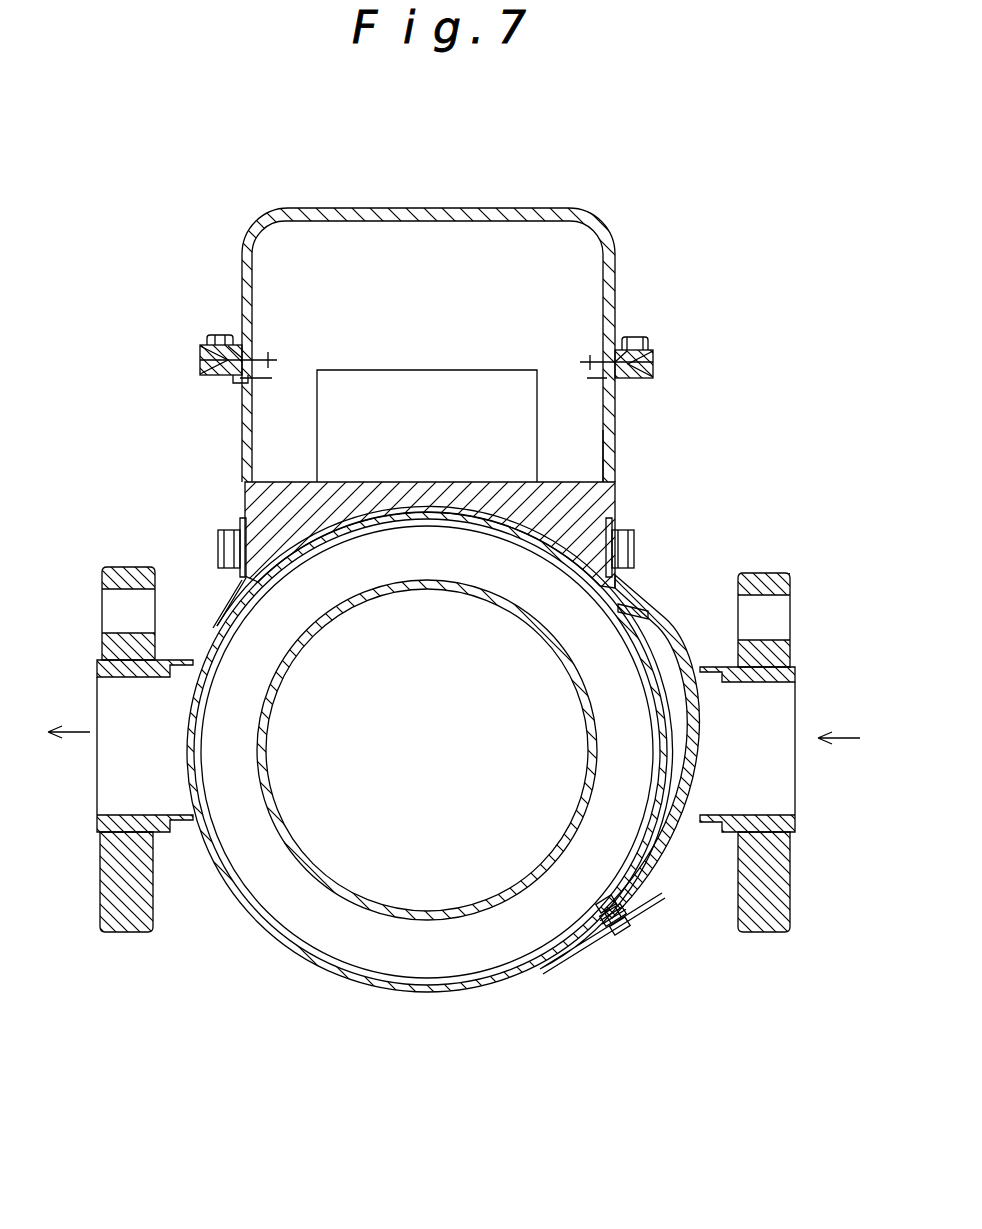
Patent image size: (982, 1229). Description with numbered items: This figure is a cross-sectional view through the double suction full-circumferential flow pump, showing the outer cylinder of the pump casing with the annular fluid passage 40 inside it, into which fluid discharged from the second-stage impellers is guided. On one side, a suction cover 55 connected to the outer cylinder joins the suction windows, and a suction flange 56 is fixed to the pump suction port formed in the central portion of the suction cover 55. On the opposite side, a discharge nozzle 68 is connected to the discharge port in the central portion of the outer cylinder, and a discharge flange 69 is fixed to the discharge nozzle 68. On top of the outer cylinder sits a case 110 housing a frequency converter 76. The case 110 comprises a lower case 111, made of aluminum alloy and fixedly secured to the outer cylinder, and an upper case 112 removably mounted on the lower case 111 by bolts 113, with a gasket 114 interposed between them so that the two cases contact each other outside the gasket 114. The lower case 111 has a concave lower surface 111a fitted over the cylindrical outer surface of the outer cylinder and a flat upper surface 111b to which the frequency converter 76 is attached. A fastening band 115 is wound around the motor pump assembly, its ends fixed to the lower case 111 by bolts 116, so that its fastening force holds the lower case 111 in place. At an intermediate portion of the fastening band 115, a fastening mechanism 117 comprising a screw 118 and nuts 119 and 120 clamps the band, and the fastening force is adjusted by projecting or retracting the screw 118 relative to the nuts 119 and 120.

The annular fluid passage 40 is at (497, 950).
The suction cover 55 is at (692, 652).
The suction flange 56 is at (778, 885).
The discharge nozzle 68 is at (179, 836).
The discharge flange 69 is at (125, 905).
The frequency converter 76 is at (483, 380).
The case 110 is at (105, 220).
The lower case 111 is at (407, 639).
The concave lower surface 111a is at (500, 546).
The flat upper surface 111b is at (605, 478).
The upper case 112 is at (240, 302).
The bolts 113 is at (632, 342).
The gasket 114 is at (262, 362).
The fastening band 115 is at (672, 622).
The bolts 116 is at (218, 548).
The fastening mechanism 117 is at (617, 944).
The screw 118 is at (627, 932).
The nut 119 is at (630, 922).
The nut 120 is at (644, 906).